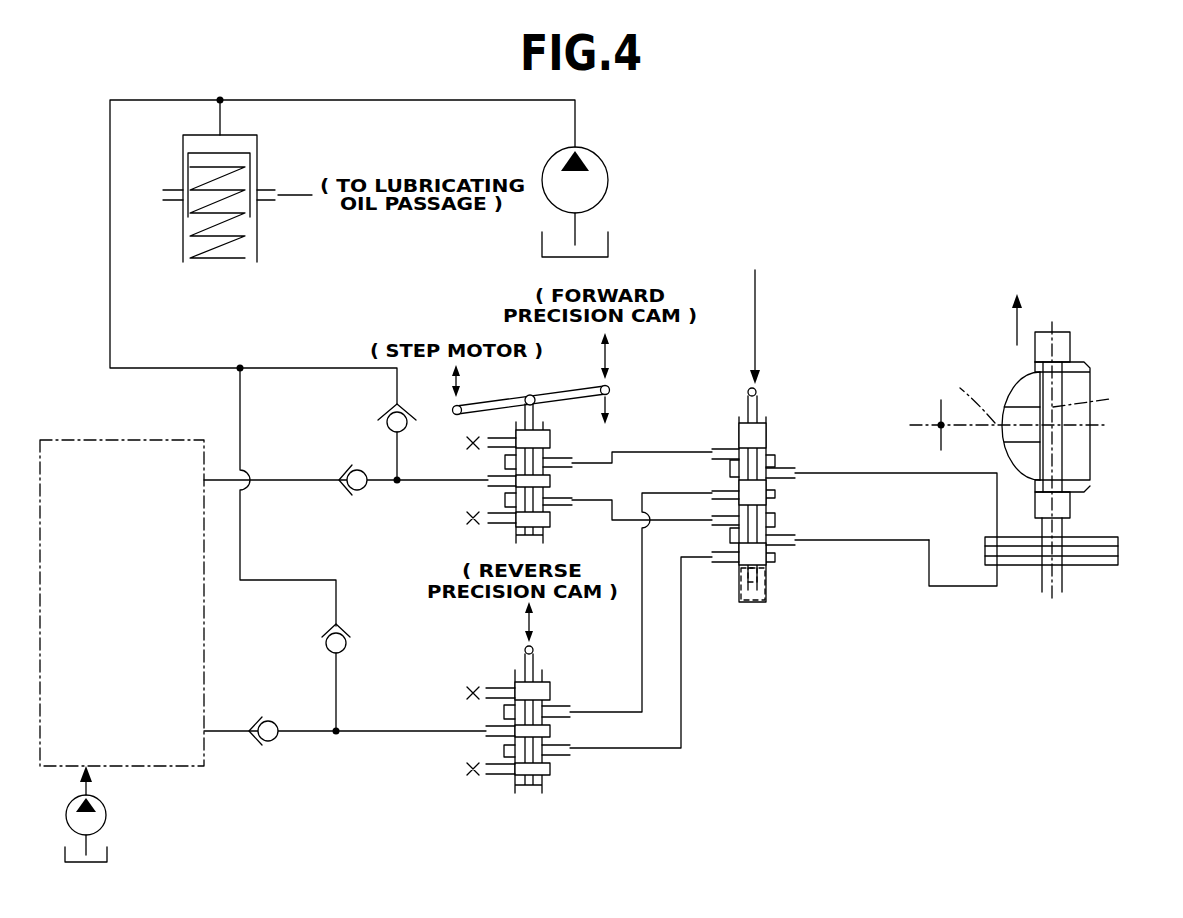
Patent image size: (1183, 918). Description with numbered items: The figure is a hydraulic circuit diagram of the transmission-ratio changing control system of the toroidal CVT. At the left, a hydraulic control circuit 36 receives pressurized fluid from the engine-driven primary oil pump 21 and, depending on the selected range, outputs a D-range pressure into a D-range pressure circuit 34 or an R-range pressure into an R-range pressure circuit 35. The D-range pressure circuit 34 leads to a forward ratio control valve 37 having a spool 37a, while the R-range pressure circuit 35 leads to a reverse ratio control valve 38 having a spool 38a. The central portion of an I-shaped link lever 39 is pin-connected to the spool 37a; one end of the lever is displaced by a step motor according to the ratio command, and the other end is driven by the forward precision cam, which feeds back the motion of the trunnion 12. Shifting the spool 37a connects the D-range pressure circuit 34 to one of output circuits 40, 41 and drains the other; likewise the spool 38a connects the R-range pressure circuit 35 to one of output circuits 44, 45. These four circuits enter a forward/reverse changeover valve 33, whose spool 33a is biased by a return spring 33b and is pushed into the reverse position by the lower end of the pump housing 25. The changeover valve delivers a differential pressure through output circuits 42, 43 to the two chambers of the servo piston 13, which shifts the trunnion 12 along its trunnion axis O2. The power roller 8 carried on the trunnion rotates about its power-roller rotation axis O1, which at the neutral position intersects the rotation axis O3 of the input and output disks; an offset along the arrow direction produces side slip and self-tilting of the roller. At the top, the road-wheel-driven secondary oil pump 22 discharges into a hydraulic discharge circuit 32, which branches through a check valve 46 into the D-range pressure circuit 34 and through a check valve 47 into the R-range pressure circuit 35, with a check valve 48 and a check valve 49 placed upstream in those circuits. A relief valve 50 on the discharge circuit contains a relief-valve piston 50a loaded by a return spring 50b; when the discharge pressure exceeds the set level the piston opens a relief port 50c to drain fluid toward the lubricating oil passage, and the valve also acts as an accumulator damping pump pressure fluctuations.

The power roller 8 is at (1015, 385).
The trunnion 12 is at (1063, 335).
The servo piston 13 is at (1020, 558).
The primary oil pump 21 is at (107, 815).
The secondary oil pump 22 is at (610, 170).
The pump housing 25 is at (756, 305).
The hydraulic discharge circuit 32 is at (355, 100).
The forward/reverse changeover valve 33 is at (782, 507).
The spool of forward/reverse changeover valve 33a is at (762, 437).
The return spring 33b is at (740, 586).
The D-range pressure circuit 34 is at (305, 483).
The R-range pressure circuit 35 is at (228, 733).
The hydraulic control circuit 36 is at (73, 440).
The forward ratio control valve 37 is at (507, 489).
The spool of forward ratio control valve 37a is at (550, 438).
The reverse ratio control valve 38 is at (562, 708).
The spool of reverse ratio control valve 38a is at (535, 688).
The I-shaped link lever 39 is at (572, 380).
The output circuit 40 is at (663, 452).
The output circuit 41 is at (625, 522).
The output circuit 42 is at (858, 471).
The output circuit 43 is at (858, 538).
The output circuit 44 is at (606, 712).
The output circuit 45 is at (683, 697).
The check valve 46 is at (387, 423).
The check valve 47 is at (326, 643).
The check valve 48 is at (362, 490).
The check valve 49 is at (275, 723).
The relief valve 50 is at (225, 185).
The relief-valve piston 50a is at (250, 152).
The return spring 50b is at (242, 238).
The relief port 50c is at (265, 188).
The power-roller rotation axis O1 is at (971, 393).
The trunnion axis O2 is at (1097, 403).
The rotation axis of input and output disks O3 is at (940, 424).